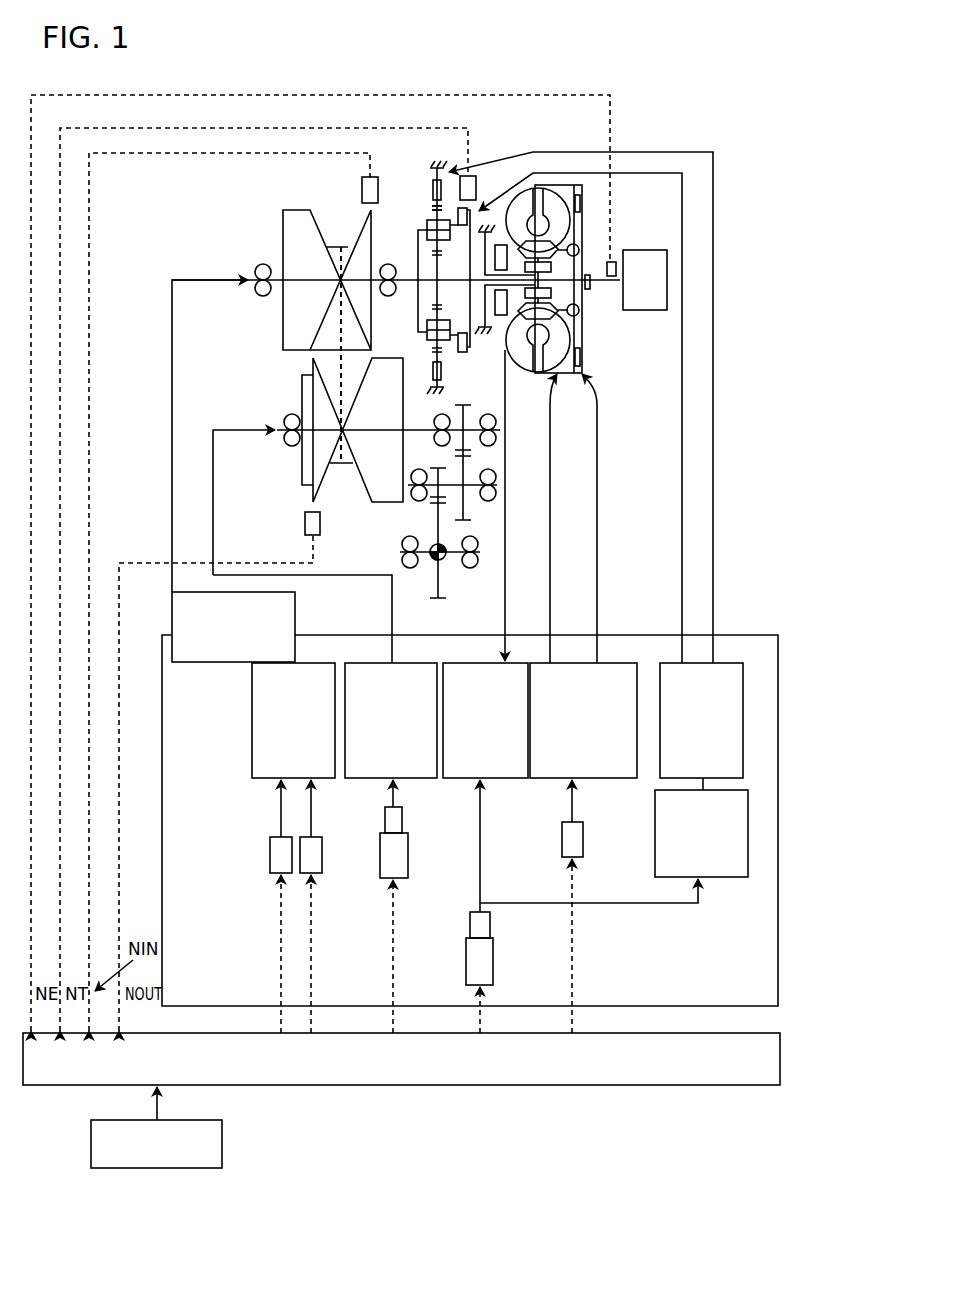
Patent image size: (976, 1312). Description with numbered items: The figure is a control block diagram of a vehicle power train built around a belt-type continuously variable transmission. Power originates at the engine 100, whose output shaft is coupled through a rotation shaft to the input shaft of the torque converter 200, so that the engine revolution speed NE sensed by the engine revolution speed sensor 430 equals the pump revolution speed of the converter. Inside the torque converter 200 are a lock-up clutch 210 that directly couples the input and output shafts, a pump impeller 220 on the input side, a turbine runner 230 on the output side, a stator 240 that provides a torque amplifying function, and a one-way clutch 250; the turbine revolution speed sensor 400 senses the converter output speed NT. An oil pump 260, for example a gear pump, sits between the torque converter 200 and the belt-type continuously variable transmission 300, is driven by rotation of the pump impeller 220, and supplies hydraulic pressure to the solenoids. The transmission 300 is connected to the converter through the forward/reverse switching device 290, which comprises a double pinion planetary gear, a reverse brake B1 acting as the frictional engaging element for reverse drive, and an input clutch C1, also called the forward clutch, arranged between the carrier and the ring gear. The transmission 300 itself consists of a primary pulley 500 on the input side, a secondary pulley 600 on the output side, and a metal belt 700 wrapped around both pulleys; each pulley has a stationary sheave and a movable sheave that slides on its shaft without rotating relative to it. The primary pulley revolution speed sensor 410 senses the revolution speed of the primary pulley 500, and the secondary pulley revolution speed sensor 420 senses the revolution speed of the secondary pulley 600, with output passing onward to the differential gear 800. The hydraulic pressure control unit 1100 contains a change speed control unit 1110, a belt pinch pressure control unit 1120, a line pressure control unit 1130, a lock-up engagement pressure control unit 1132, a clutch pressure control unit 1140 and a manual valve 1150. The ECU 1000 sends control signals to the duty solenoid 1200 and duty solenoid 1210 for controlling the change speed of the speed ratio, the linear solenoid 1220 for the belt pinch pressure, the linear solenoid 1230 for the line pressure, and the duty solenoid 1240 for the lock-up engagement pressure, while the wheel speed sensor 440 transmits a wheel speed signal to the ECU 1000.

The engine 100 is at (636, 250).
The torque converter 200 is at (581, 261).
The lock-up clutch 210 is at (581, 352).
The pump impeller 220 is at (521, 352).
The turbine runner 230 is at (553, 205).
The stator 240 is at (548, 250).
The one-way clutch 250 is at (588, 289).
The oil pump 260 is at (499, 325).
The forward/reverse switching device 290 is at (411, 176).
The belt-type continuously variable transmission 300 is at (407, 496).
The turbine revolution speed sensor 400 is at (476, 186).
The primary pulley revolution speed sensor 410 is at (362, 190).
The secondary pulley revolution speed sensor 420 is at (320, 520).
The engine revolution speed sensor 430 is at (617, 277).
The wheel speed sensor 440 is at (198, 1168).
The primary pulley 500 is at (283, 328).
The secondary pulley 600 is at (318, 462).
The belt 700 is at (342, 352).
The differential gear 800 is at (449, 566).
The ECU 1000 is at (704, 1086).
The hydraulic pressure control unit 1100 is at (742, 634).
The change speed control unit 1110 is at (252, 752).
The belt pinch pressure control unit 1120 is at (437, 781).
The line pressure control unit 1130 is at (493, 781).
The lock-up engagement pressure control unit 1132 is at (585, 782).
The clutch pressure control unit 1140 is at (716, 878).
The manual valve 1150 is at (660, 768).
The duty solenoid (1) 1200 is at (270, 855).
The duty solenoid (2) 1210 is at (323, 853).
The linear solenoid 1220 is at (408, 857).
The linear solenoid 1230 is at (494, 955).
The duty solenoid 1240 is at (562, 847).
The reverse brake B1 is at (433, 190).
The input clutch C1 is at (458, 216).